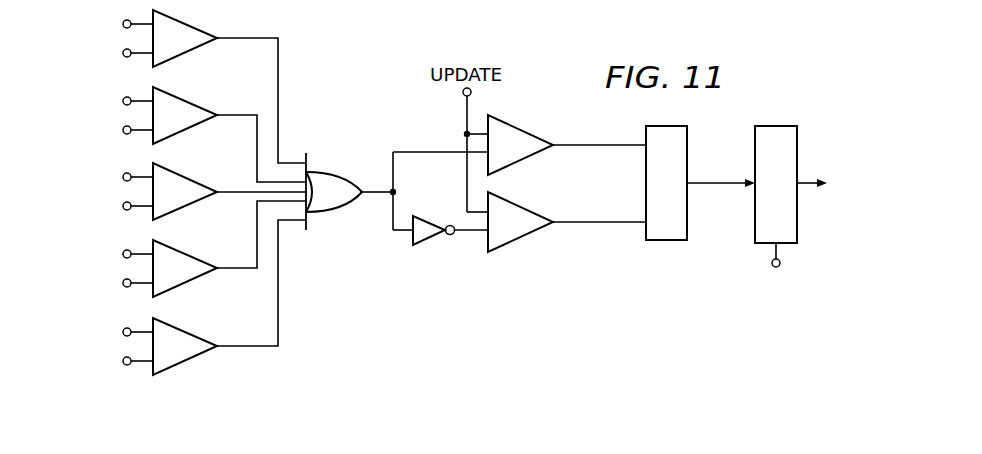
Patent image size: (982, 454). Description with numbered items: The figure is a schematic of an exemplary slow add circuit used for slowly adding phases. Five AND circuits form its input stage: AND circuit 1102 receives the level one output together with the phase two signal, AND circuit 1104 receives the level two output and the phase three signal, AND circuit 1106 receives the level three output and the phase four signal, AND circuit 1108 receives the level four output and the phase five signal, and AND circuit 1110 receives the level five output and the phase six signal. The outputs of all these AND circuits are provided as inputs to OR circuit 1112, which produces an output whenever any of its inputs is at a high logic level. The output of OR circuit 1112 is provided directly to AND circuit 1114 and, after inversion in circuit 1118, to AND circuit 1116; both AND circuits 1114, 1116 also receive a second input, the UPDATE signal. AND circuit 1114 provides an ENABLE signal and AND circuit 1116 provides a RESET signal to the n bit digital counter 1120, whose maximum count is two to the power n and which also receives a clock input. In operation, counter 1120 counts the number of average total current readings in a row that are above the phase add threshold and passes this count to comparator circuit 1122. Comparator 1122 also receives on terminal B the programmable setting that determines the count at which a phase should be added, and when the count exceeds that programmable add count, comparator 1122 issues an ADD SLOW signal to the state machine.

The AND circuit 1102 is at (185, 53).
The AND circuit 1104 is at (185, 130).
The AND circuit 1106 is at (185, 206).
The AND circuit 1108 is at (185, 283).
The AND circuit 1110 is at (185, 361).
The OR circuit 1112 is at (343, 212).
The AND circuit 1114 is at (539, 113).
The AND circuit 1116 is at (520, 238).
The inverter circuit 1118 is at (430, 238).
The n bit digital counter 1120 is at (668, 240).
The comparator circuit 1122 is at (780, 126).